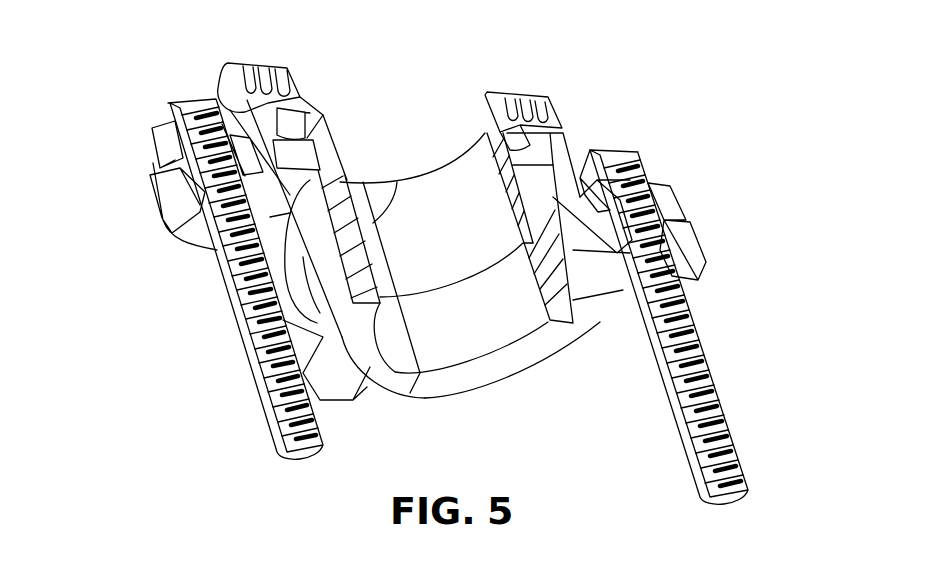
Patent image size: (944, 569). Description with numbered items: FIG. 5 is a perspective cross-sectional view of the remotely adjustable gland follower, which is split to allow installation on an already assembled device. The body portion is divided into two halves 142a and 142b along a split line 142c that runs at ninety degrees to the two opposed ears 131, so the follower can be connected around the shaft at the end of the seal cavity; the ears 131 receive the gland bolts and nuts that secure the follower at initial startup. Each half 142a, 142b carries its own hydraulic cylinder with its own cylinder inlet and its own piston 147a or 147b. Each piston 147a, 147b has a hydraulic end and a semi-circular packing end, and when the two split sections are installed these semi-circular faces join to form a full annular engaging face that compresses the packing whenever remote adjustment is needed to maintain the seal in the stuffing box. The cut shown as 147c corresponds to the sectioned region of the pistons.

The ears 131 is at (692, 247).
The body half 142a is at (481, 148).
The body half 142b is at (228, 84).
The split line 142c is at (397, 182).
The piston 147a is at (505, 333).
The piston 147b is at (397, 340).
The curved support surface 147c is at (420, 360).